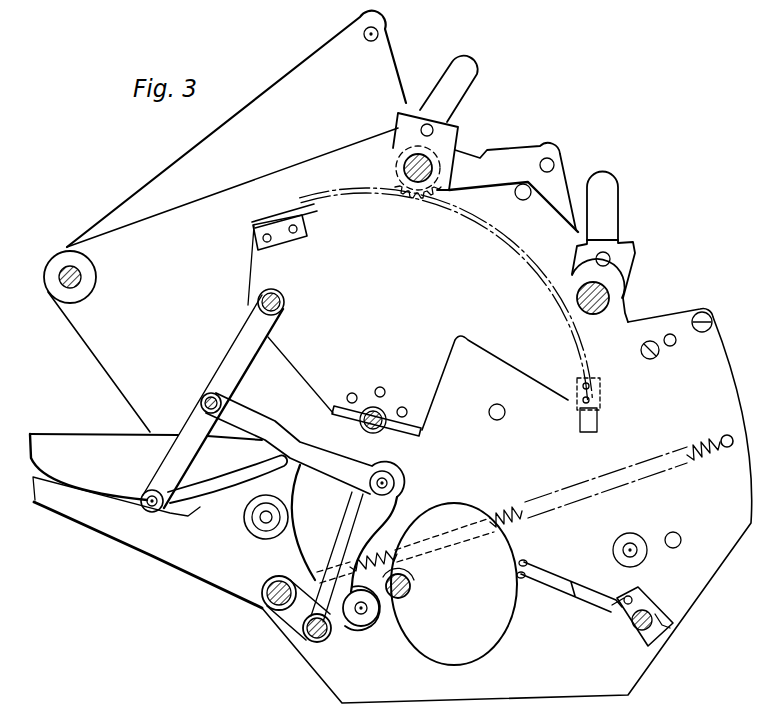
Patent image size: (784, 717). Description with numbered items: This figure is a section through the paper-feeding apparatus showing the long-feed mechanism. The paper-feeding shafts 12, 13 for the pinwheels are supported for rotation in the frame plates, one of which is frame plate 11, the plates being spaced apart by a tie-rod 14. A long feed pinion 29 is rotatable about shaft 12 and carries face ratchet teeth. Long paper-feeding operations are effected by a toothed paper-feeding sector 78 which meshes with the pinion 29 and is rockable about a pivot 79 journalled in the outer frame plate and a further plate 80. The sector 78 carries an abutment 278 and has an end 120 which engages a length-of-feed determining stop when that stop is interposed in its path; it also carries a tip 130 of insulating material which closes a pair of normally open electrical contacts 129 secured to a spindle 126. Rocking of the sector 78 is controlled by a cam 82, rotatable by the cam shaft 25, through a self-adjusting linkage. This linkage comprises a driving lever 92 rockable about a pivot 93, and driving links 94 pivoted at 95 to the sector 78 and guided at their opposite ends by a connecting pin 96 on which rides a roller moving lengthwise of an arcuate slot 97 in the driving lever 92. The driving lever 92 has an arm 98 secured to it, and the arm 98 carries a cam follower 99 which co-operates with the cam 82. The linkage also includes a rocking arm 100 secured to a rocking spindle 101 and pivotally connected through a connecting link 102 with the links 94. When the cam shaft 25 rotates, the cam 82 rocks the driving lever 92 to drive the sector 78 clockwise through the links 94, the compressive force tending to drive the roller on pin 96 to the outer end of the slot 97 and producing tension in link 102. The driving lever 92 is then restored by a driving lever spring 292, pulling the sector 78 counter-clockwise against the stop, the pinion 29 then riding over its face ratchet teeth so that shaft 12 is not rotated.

The frame plate 11 is at (303, 71).
The further plate 80 is at (221, 191).
The tie-rod 14 is at (69, 262).
The paper-feeding shaft 12 is at (428, 164).
The long feed pinion 29 is at (394, 176).
The toothed paper-feeding sector 78 is at (317, 213).
The abutment 278 is at (254, 228).
The end of sector 120 is at (252, 251).
The pivot 95 is at (258, 300).
The driving links 94 is at (226, 364).
The connecting pin 96 is at (151, 512).
The arcuate slot 97 is at (112, 500).
The driving lever 92 is at (193, 563).
The paper-feeding shaft 13 is at (608, 302).
The tip 130 is at (597, 421).
The pivot 79 is at (376, 428).
The connecting link 102 is at (318, 453).
The rocking arm 100 is at (381, 507).
The rocking spindle 101 is at (317, 643).
The arm 98 is at (292, 611).
The cam follower 99 is at (365, 628).
The cam shaft 25 is at (412, 587).
The pivot 93 is at (268, 517).
The cam 82 is at (468, 510).
The driving lever spring 292 is at (718, 457).
The electrical contacts 129 is at (535, 568).
The spindle 126 is at (632, 640).